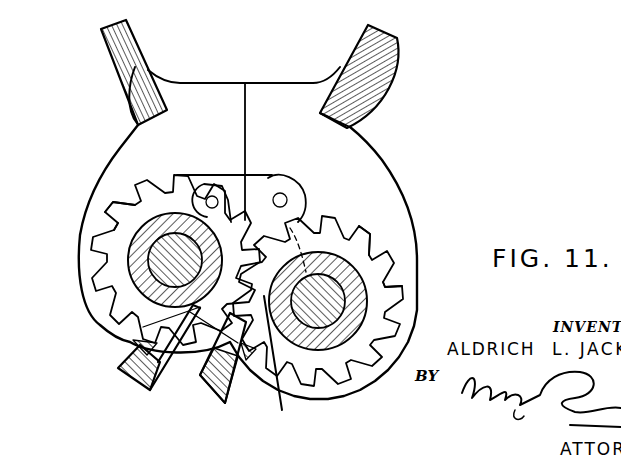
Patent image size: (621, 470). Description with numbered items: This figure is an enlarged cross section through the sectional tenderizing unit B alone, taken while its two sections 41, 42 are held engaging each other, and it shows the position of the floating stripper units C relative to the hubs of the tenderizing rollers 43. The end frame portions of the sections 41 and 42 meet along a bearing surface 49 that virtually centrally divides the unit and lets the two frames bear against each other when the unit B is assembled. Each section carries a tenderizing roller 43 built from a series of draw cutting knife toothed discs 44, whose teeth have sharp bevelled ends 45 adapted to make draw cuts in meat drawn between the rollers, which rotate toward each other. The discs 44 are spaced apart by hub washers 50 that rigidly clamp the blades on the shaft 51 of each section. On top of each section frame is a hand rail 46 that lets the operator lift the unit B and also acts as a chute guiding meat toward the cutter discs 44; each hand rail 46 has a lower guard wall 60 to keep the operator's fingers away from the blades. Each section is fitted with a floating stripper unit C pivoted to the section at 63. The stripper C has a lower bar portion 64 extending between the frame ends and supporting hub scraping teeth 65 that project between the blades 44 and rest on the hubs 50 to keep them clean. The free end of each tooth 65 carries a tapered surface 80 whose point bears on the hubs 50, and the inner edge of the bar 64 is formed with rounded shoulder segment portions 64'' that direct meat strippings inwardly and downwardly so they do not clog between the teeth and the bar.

The section 41 is at (182, 97).
The section 42 is at (333, 145).
The tenderizing roller 43 is at (97, 238).
The knife toothed disc 44 is at (137, 185).
The sharp bevelled end 45 is at (110, 207).
The hand rail 46 is at (101, 30).
The bearing surface 49 is at (247, 107).
The hub washer 50 is at (150, 251).
The shaft 51 is at (152, 262).
The lower guard wall 60 is at (133, 121).
The pivot 63 is at (207, 178).
The lower bar portion 64 is at (170, 364).
The rounded shoulder segment portion 64'' is at (199, 353).
The hub scraping tooth 65 is at (143, 327).
The tapered surface 80 is at (254, 250).
The sectional tenderizing unit B is at (213, 83).
The floating stripper unit C is at (120, 368).